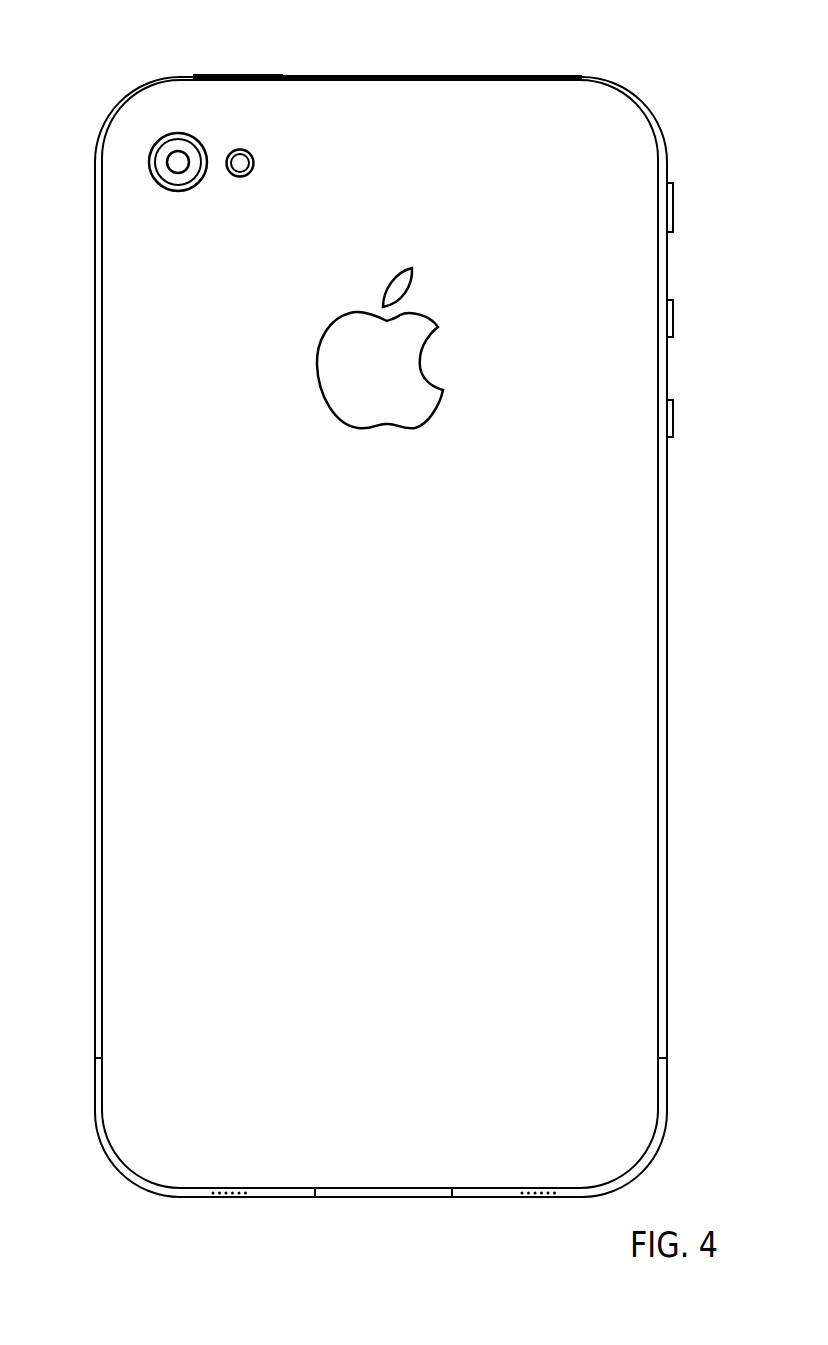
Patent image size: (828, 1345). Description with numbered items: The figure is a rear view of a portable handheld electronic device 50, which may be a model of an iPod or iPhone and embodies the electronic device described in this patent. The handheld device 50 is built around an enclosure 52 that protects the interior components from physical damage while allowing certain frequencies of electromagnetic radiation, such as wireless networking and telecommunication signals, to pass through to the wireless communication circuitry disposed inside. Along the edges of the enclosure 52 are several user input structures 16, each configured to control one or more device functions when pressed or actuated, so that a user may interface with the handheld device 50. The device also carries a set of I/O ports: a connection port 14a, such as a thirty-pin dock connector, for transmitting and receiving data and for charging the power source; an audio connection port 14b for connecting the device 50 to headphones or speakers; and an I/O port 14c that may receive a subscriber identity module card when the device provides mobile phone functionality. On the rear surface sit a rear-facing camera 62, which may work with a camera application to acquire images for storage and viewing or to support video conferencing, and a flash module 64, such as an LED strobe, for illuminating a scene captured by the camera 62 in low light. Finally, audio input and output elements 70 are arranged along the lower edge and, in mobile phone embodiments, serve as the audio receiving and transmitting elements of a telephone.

The portable handheld electronic device 50 is at (375, 635).
The enclosure 52 is at (95, 487).
The connection port 14a is at (371, 1199).
The audio connection port 14b is at (537, 77).
The I/O port 14c is at (390, 77).
The user input structures 16 is at (232, 76).
The rear-facing camera 62 is at (181, 132).
The flash module 64 is at (252, 152).
The audio input and output elements 70 is at (226, 1199).